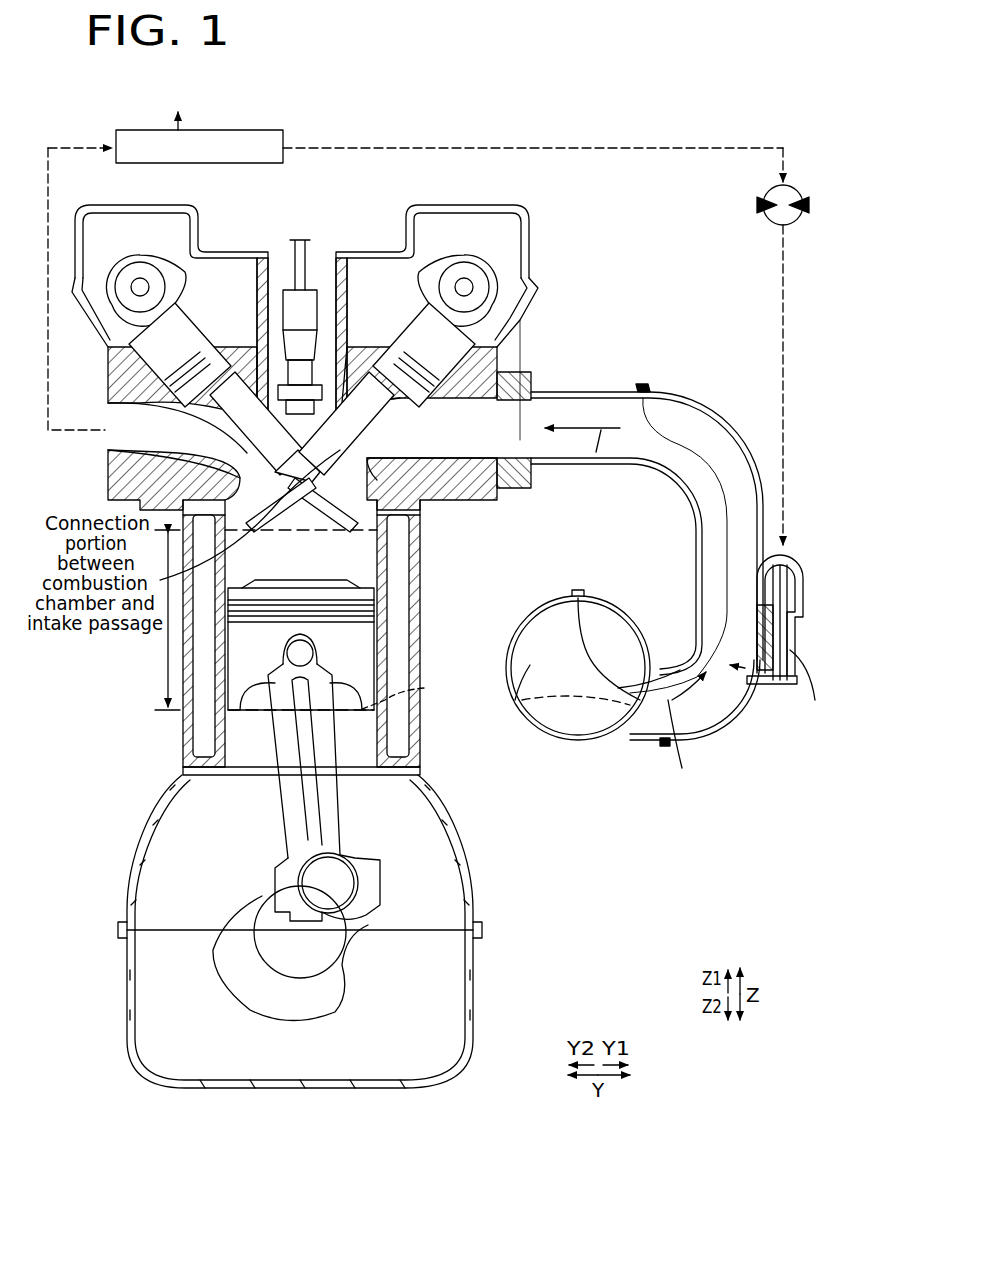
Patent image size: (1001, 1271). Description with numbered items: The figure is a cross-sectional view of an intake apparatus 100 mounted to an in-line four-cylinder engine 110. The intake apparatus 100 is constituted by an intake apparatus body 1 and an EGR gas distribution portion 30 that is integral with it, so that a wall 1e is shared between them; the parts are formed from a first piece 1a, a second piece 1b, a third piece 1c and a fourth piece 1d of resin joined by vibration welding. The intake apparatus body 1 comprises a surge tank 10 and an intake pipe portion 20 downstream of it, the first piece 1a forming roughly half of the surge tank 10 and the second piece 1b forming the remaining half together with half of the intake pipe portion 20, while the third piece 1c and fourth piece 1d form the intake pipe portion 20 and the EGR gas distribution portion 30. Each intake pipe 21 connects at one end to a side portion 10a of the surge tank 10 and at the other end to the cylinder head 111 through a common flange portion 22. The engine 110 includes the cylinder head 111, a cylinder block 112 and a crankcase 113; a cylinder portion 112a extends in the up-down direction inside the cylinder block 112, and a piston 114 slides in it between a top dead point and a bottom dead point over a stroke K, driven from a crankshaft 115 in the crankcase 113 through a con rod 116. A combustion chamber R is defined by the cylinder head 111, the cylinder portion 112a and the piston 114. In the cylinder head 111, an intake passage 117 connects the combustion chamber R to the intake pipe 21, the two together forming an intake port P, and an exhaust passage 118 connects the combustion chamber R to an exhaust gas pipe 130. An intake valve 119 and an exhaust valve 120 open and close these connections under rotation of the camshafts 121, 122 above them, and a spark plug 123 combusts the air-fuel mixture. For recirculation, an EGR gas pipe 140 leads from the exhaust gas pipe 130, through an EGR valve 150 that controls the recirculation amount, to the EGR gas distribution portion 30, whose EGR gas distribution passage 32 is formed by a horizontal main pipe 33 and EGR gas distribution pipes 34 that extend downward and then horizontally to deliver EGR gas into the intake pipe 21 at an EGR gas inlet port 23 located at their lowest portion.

The intake apparatus body 1 is at (690, 304).
The first piece 1a is at (513, 640).
The second piece 1b is at (690, 660).
The third piece 1c is at (745, 458).
The fourth piece 1d is at (800, 572).
The wall 1e is at (765, 628).
The surge tank 10 is at (583, 752).
The side portion 10a is at (605, 740).
The intake pipe portion 20 is at (718, 410).
The intake pipe 21 is at (640, 742).
The flange portion 22 is at (497, 488).
The EGR gas inlet port 23 is at (750, 650).
The EGR gas distribution portion 30 is at (795, 462).
The EGR gas distribution passage 32 is at (748, 699).
The main pipe 33 is at (798, 385).
The EGR gas distribution pipe 34 is at (763, 680).
The intake apparatus 100 is at (722, 280).
The engine 110 is at (538, 230).
The cylinder head 111 is at (522, 300).
The cylinder block 112 is at (408, 626).
The cylinder portion 112a is at (376, 558).
The crankcase 113 is at (473, 876).
The piston 114 is at (365, 648).
The crankshaft 115 is at (330, 985).
The con rod 116 is at (362, 870).
The intake passage 117 is at (505, 372).
The exhaust passage 118 is at (118, 450).
The intake valve 119 is at (358, 432).
The exhaust valve 120 is at (246, 442).
The camshaft 121 is at (457, 270).
The camshaft 122 is at (173, 270).
The spark plug 123 is at (300, 240).
The exhaust gas pipe 130 is at (270, 130).
The EGR gas pipe 140 is at (545, 148).
The EGR valve 150 is at (795, 185).
The intake port P is at (553, 398).
The combustion chamber R is at (372, 541).
The stroke K is at (133, 620).